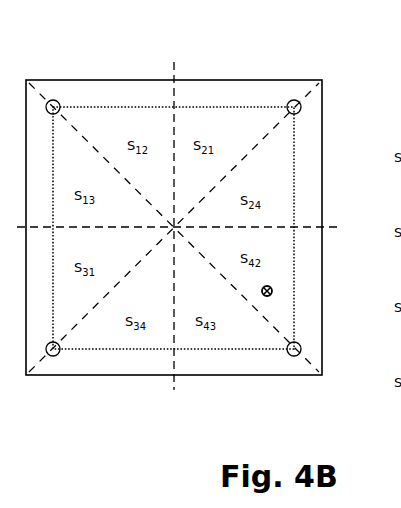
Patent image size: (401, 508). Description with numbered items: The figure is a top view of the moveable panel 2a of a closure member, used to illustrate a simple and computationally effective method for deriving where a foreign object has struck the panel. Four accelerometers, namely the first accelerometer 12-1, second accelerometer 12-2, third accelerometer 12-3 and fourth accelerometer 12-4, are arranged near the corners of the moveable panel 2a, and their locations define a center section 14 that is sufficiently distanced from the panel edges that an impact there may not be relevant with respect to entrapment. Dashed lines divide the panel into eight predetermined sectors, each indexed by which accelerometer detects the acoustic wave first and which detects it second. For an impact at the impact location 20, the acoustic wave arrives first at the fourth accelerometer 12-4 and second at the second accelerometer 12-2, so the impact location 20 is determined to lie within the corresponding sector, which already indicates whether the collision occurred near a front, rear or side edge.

The moveable panel 2a is at (323, 99).
The center section 14 is at (113, 107).
The first accelerometer 12-1 is at (58, 100).
The second accelerometer 12-2 is at (298, 100).
The third accelerometer 12-3 is at (57, 356).
The fourth accelerometer 12-4 is at (298, 356).
The impact location 20 is at (282, 287).